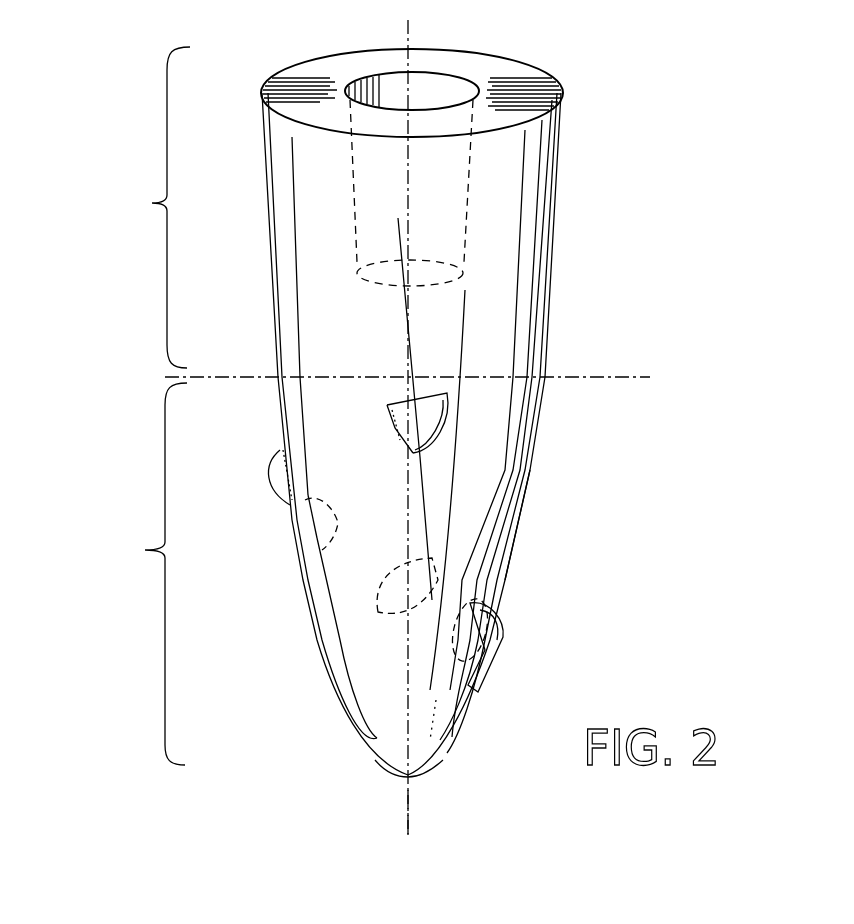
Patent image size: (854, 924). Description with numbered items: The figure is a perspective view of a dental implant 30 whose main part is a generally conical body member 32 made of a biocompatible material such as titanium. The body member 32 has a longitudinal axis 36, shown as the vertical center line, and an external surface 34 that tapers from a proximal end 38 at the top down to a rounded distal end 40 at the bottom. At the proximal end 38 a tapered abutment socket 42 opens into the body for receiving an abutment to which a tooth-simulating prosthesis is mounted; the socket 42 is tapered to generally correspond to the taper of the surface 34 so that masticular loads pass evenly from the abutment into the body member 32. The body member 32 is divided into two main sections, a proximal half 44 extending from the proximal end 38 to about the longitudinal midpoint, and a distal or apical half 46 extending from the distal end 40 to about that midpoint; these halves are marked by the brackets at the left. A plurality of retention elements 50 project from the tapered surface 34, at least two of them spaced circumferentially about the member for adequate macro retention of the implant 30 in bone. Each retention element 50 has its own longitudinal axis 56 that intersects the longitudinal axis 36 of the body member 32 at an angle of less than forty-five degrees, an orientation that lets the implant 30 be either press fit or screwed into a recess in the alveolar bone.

The dental implant 30 is at (147, 420).
The body member 32 is at (507, 333).
The external surface 34 is at (518, 553).
The longitudinal axis 36 is at (410, 790).
The proximal end 38 is at (517, 65).
The distal end 40 is at (390, 772).
The abutment socket 42 is at (475, 142).
The proximal half 44 is at (143, 207).
The distal half 46 is at (141, 574).
The retention elements 50 is at (558, 653).
The longitudinal axis of the retention element 56 is at (428, 522).